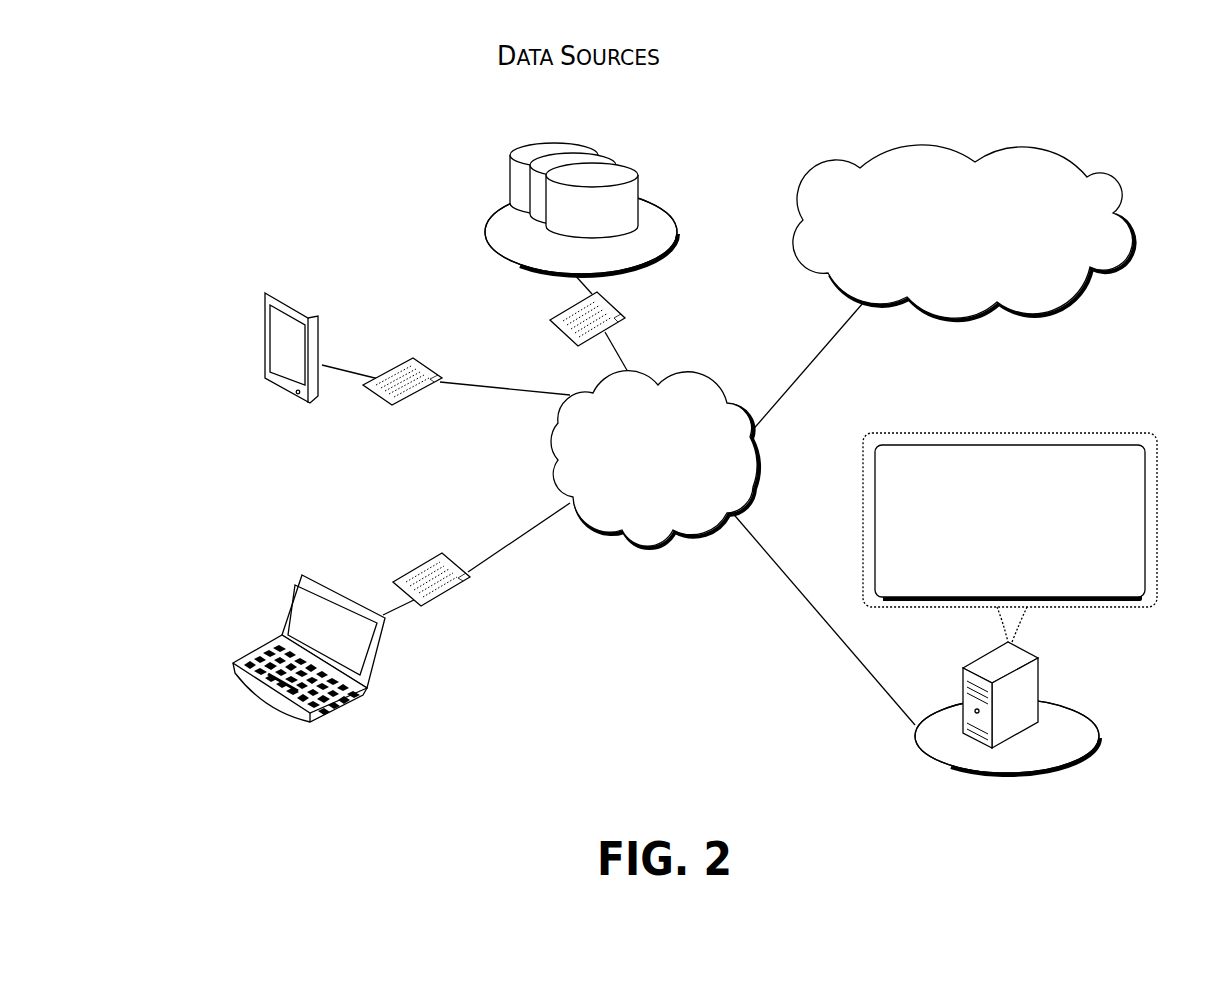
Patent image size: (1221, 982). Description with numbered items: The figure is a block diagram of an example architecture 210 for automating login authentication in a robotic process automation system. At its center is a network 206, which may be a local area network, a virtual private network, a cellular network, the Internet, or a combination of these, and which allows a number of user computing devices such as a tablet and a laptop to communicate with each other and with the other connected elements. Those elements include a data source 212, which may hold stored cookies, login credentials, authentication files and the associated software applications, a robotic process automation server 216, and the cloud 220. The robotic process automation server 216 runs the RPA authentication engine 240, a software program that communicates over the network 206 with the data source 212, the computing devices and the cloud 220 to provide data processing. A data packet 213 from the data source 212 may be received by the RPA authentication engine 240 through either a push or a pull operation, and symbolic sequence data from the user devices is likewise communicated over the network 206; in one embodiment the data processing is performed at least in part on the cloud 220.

The architecture 210 is at (203, 106).
The data source 212 is at (658, 200).
The data packet 213 is at (618, 302).
The network 206 is at (558, 437).
The cloud 220 is at (1085, 293).
The RPA authentication engine 240 is at (1028, 577).
The robotic process automation server 216 is at (1083, 715).